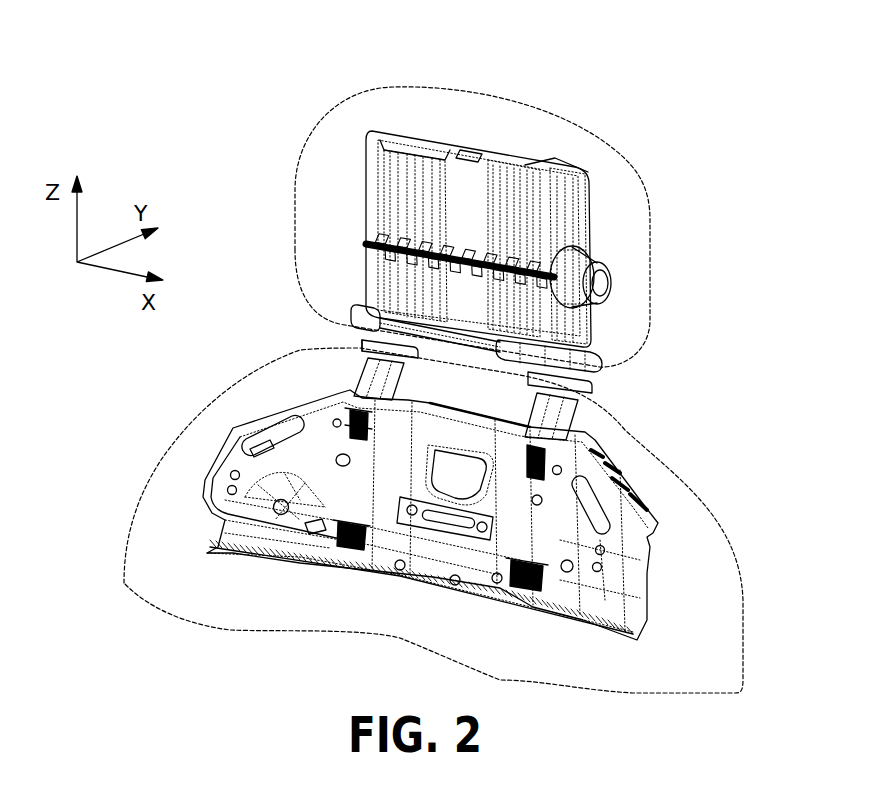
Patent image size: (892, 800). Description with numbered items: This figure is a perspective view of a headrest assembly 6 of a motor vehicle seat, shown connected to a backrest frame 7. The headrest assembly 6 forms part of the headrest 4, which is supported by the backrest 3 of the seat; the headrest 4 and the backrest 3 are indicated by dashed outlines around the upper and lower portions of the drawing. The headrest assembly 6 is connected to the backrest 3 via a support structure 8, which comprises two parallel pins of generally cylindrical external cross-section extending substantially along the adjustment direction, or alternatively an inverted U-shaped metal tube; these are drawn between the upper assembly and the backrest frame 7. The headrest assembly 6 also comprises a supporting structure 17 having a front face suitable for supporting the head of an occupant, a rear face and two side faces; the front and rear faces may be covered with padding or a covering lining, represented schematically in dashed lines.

The backrest 3 is at (735, 554).
The headrest 4 is at (642, 192).
The headrest assembly 6 is at (560, 195).
The backrest frame 7 is at (675, 477).
The support structure 8 is at (610, 382).
The supporting structure 17 is at (410, 123).